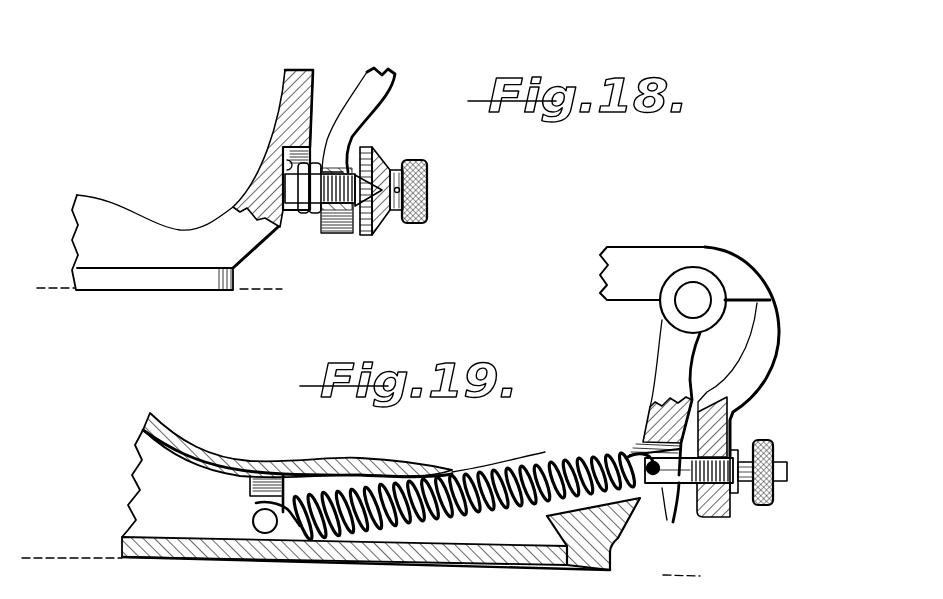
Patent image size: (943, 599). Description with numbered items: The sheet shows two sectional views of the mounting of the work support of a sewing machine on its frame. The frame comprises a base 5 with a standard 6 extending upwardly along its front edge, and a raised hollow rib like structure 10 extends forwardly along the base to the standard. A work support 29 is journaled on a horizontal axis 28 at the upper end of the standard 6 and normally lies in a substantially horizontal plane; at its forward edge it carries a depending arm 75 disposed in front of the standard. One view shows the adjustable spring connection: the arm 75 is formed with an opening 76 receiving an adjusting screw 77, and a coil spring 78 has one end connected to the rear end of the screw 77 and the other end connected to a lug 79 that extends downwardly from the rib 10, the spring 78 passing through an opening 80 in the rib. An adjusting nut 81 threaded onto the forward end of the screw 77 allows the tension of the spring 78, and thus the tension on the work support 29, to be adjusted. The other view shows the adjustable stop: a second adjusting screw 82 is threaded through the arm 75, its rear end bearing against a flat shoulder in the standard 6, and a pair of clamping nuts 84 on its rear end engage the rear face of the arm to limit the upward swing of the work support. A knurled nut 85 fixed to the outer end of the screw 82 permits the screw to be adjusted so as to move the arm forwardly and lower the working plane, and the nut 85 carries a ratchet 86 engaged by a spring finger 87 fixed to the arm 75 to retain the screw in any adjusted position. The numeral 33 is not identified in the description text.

In FIG. 19, the base 5 is at (477, 550).
In FIG. 18, the standard 6 is at (290, 104).
In FIG. 19, the standard 6 is at (666, 362).
In FIG. 19, the rib like structure 10 is at (400, 466).
In FIG. 19, the horizontal axis 28 is at (693, 300).
In FIG. 19, the work support 29 is at (640, 266).
In FIG. 18, the block 33 is at (283, 153).
In FIG. 18, the depending arm 75 is at (364, 88).
In FIG. 19, the depending arm 75 is at (770, 337).
In FIG. 19, the opening 76 is at (690, 494).
In FIG. 19, the adjusting screw 77 is at (664, 508).
In FIG. 19, the coil spring 78 is at (530, 469).
In FIG. 19, the lug 79 is at (256, 496).
In FIG. 19, the opening 80 is at (468, 475).
In FIG. 19, the adjusting nut 81 is at (770, 437).
In FIG. 18, the adjusting screw 82 is at (292, 218).
In FIG. 18, the clamping nuts 84 is at (303, 218).
In FIG. 18, the knurled nut 85 is at (428, 175).
In FIG. 18, the ratchet 86 is at (378, 166).
In FIG. 18, the spring finger 87 is at (383, 216).